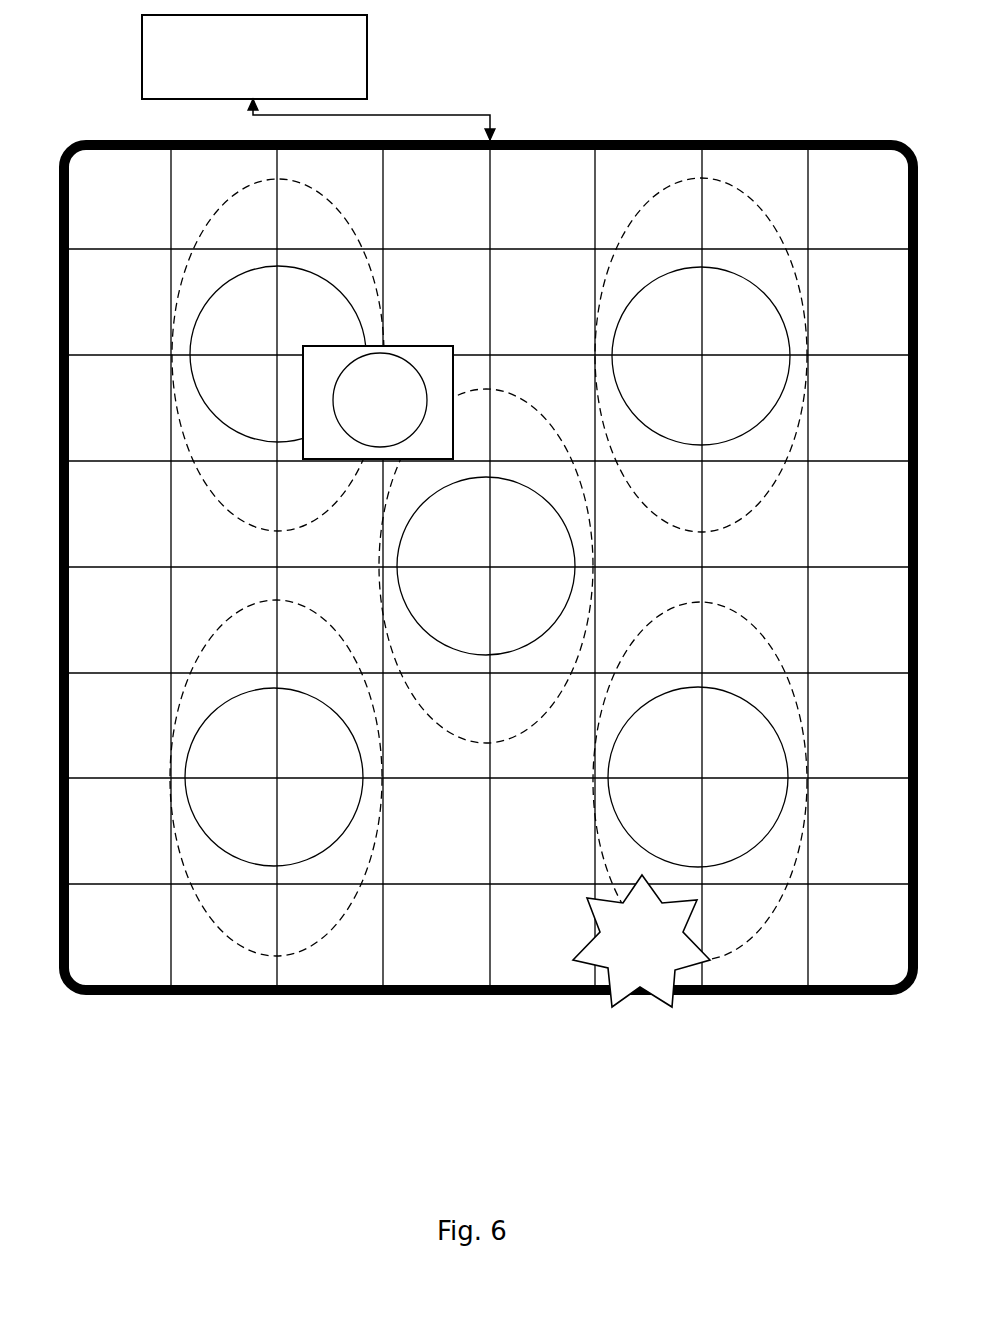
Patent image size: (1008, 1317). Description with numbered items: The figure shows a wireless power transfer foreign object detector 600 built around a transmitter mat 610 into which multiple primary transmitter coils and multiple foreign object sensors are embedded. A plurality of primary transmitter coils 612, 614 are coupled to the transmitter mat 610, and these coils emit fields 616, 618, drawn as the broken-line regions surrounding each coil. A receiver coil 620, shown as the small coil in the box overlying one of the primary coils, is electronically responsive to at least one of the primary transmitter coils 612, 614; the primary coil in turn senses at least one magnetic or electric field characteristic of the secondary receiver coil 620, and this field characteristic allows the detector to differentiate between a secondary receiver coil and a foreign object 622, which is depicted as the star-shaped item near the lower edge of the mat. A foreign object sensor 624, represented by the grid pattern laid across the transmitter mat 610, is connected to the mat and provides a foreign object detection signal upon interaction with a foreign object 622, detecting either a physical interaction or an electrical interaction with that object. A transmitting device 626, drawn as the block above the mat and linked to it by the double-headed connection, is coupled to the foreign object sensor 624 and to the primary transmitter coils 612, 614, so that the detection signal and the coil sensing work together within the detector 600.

The wireless power transfer foreign object detector 600 is at (828, 120).
The transmitter mat 610 is at (187, 995).
The primary transmitter coil 612 is at (200, 403).
The primary transmitter coil 614 is at (190, 815).
The field 616 is at (182, 288).
The field 618 is at (180, 696).
The receiver coil 620 is at (333, 402).
The foreign object 622 is at (612, 1000).
The foreign object sensor 624 is at (381, 886).
The transmitting device 626 is at (142, 56).